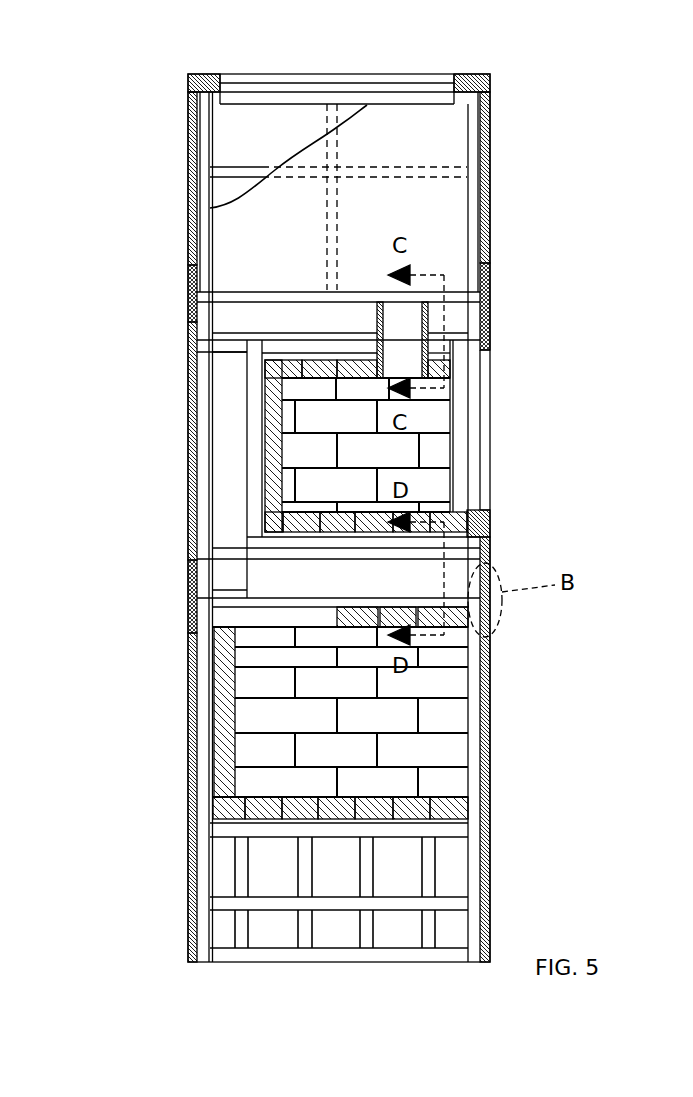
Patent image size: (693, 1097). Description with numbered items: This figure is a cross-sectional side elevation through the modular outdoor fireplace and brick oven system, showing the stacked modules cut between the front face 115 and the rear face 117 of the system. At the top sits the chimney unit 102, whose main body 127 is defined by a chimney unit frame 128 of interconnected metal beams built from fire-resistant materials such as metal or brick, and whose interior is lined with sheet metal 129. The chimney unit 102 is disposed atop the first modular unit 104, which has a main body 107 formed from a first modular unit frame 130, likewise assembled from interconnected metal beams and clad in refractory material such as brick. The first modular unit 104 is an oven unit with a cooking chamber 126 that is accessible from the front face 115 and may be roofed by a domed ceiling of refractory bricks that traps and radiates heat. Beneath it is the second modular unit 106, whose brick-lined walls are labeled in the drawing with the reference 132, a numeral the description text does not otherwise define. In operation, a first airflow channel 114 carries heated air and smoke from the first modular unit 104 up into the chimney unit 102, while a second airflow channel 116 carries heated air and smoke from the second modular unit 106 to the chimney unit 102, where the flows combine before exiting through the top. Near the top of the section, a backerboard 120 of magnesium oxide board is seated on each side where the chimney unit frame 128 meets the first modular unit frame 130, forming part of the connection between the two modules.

The chimney unit 102 is at (188, 145).
The first modular unit 104 is at (188, 407).
The second modular unit 106 is at (188, 804).
The main body 107 is at (200, 440).
The first airflow channel 114 is at (410, 365).
The front face 115 is at (503, 202).
The second airflow channel 116 is at (222, 477).
The rear face 117 is at (186, 195).
The backerboard 120 is at (470, 77).
The cooking chamber 126 is at (383, 448).
The main body 127 is at (200, 245).
The chimney unit frame 128 is at (195, 277).
The sheet metal 129 is at (458, 137).
The first modular unit frame 130 is at (200, 322).
The lower wall section 132 is at (202, 617).